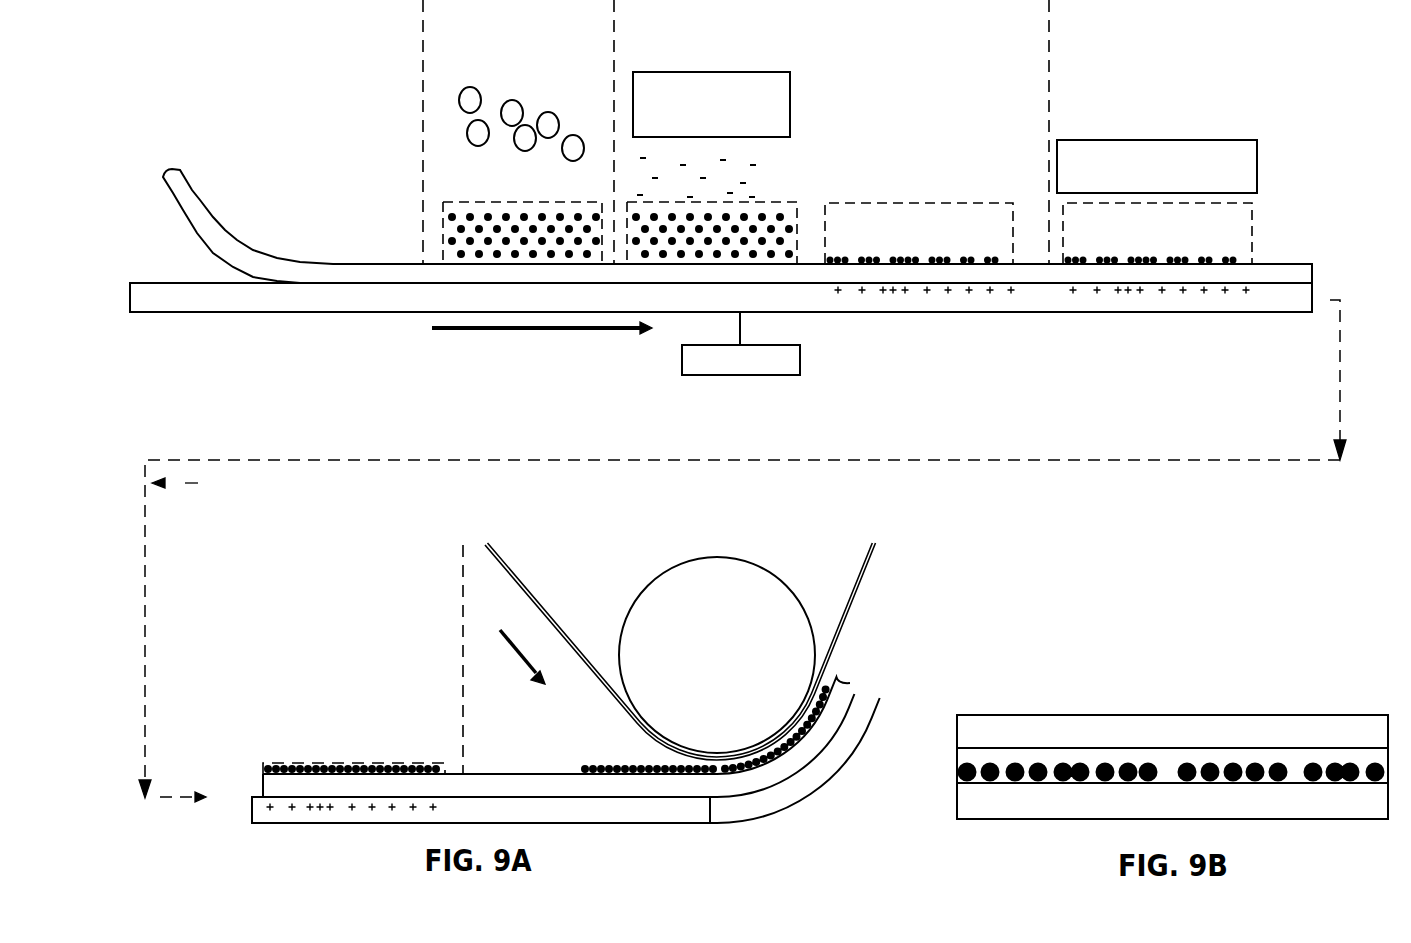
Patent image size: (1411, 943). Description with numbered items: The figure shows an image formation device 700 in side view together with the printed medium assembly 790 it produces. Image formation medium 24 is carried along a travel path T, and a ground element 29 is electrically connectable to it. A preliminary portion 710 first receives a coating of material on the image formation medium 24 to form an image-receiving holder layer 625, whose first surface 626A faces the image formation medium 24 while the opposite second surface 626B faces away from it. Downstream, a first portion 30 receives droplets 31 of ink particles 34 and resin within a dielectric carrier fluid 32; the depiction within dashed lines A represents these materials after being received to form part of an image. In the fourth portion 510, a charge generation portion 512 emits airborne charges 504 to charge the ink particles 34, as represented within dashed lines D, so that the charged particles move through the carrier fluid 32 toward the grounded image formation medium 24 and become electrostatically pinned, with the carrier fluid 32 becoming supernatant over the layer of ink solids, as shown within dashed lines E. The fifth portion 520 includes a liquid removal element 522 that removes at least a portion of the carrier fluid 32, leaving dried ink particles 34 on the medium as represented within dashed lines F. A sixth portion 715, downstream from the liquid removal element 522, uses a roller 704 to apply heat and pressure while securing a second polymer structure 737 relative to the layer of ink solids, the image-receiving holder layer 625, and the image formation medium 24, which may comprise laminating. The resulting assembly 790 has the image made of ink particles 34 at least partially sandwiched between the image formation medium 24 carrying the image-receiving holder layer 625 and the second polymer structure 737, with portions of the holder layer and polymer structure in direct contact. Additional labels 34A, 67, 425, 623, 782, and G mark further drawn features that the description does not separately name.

In FIG. 9A, the image formation device 700 is at (162, 87).
In FIG. 9A, the preliminary portion 710 is at (325, 132).
In FIG. 9A, the first portion 30 is at (528, 132).
In FIG. 9A, the fourth portion 510 is at (918, 132).
In FIG. 9A, the fifth portion 520 is at (1162, 84).
In FIG. 9A, the sixth portion 715 is at (585, 647).
In FIG. 9A, the droplets 31 is at (522, 101).
In FIG. 9A, the carrier fluid 32 is at (538, 212).
In FIG. 9A, the particles 34A is at (490, 212).
In FIG. 9B, the ink particles 34 is at (1013, 765).
In FIG. 9A, the charge generation portion 512 is at (678, 72).
In FIG. 9A, the airborne charges 504 is at (760, 163).
In FIG. 9A, the liquid removal element 522 is at (1162, 132).
In FIG. 9A, the image-receiving holder layer 625 is at (183, 217).
In FIG. 9B, the image-receiving holder layer 625 is at (956, 758).
In FIG. 9A, the first surface 626A is at (198, 247).
In FIG. 9B, the first surface 626A is at (992, 748).
In FIG. 9A, the second surface 626B is at (227, 232).
In FIG. 9B, the second surface 626B is at (978, 783).
In FIG. 9A, the image formation medium 24 is at (130, 300).
In FIG. 9B, the image formation medium 24 is at (957, 728).
In FIG. 9A, the image formation medium 623 is at (645, 821).
In FIG. 9A, the charges 67 is at (862, 298).
In FIG. 9A, the image-receiving holder assembly 425 is at (1314, 273).
In FIG. 9A, the ground element 29 is at (682, 357).
In FIG. 9A, the travel path T is at (550, 328).
In FIG. 9A, the second polymer structure 737 is at (552, 623).
In FIG. 9B, the second polymer structure 737 is at (982, 820).
In FIG. 9A, the roller 704 is at (725, 637).
In FIG. 9A, the rotation direction 782 is at (767, 576).
In FIG. 9B, the printed medium assembly 790 is at (1133, 684).
In FIG. 9A, the dashed lines A is at (445, 202).
In FIG. 9A, the dashed lines D is at (797, 202).
In FIG. 9A, the dashed lines E is at (1000, 203).
In FIG. 9A, the dashed lines F is at (1252, 206).
In FIG. 9A, the location G is at (437, 763).